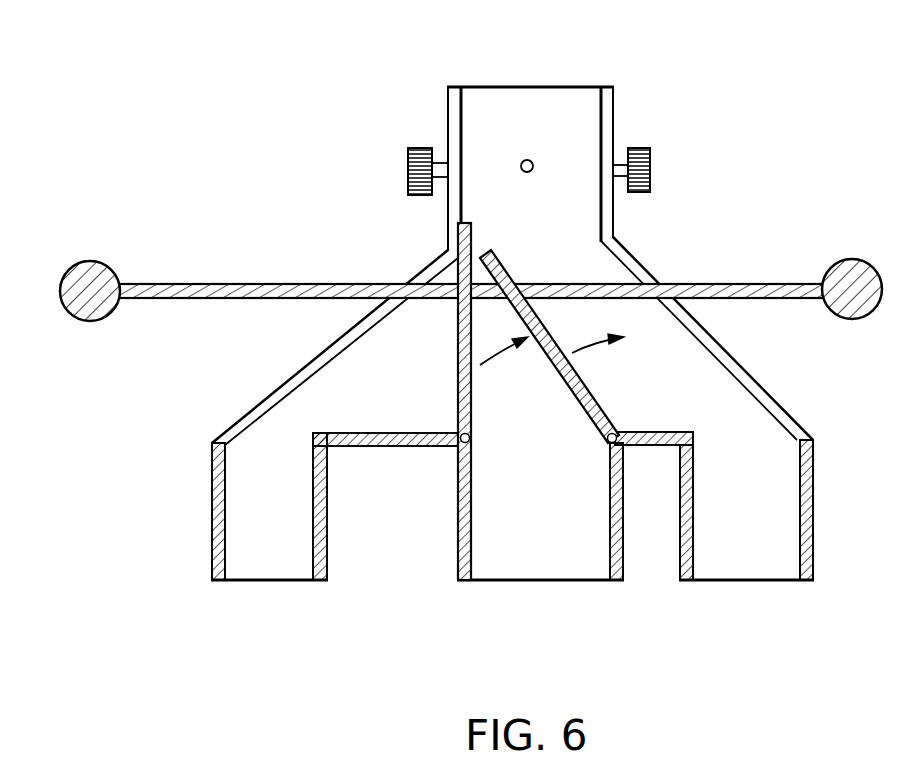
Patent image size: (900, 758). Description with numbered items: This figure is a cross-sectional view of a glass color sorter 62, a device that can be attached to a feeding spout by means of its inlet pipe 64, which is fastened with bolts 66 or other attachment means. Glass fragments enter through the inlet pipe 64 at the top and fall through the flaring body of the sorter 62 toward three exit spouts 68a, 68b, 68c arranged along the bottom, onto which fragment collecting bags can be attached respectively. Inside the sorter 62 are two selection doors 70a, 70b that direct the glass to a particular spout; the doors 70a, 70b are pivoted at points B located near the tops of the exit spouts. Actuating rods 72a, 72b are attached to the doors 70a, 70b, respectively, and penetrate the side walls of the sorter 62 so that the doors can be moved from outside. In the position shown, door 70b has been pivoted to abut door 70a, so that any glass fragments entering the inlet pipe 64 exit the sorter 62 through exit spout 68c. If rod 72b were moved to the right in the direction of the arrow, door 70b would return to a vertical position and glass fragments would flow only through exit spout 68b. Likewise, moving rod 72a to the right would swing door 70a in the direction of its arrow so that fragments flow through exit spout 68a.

The glass color sorter 62 is at (375, 251).
The inlet pipe 64 is at (606, 118).
The bolts 66 is at (527, 160).
The exit spout 68a is at (225, 530).
The exit spout 68b is at (473, 520).
The exit spout 68c is at (693, 520).
The selection door 70a is at (458, 405).
The selection door 70b is at (603, 410).
The actuating rod 72a is at (86, 265).
The actuating rod 72b is at (858, 263).
The pivot points B is at (606, 440).